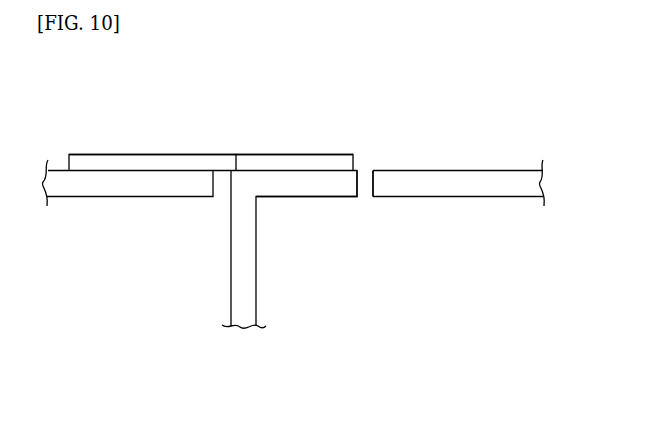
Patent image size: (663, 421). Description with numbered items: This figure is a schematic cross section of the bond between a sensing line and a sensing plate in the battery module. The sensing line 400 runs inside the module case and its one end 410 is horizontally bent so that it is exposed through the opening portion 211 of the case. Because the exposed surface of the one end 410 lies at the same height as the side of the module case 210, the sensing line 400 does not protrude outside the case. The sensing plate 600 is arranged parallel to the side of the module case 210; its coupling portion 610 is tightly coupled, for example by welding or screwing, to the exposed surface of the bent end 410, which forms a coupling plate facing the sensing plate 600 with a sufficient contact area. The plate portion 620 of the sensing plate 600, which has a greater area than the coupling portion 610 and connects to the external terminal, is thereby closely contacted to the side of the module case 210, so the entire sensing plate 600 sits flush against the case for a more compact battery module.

The side of the module case 210 is at (463, 180).
The opening portion of the module case 211 is at (363, 183).
The sensing line 400 is at (271, 286).
The one end of the sensing line 410 is at (314, 197).
The sensing plate 600 is at (354, 151).
The coupling portion 610 is at (298, 162).
The plate portion 620 is at (151, 162).